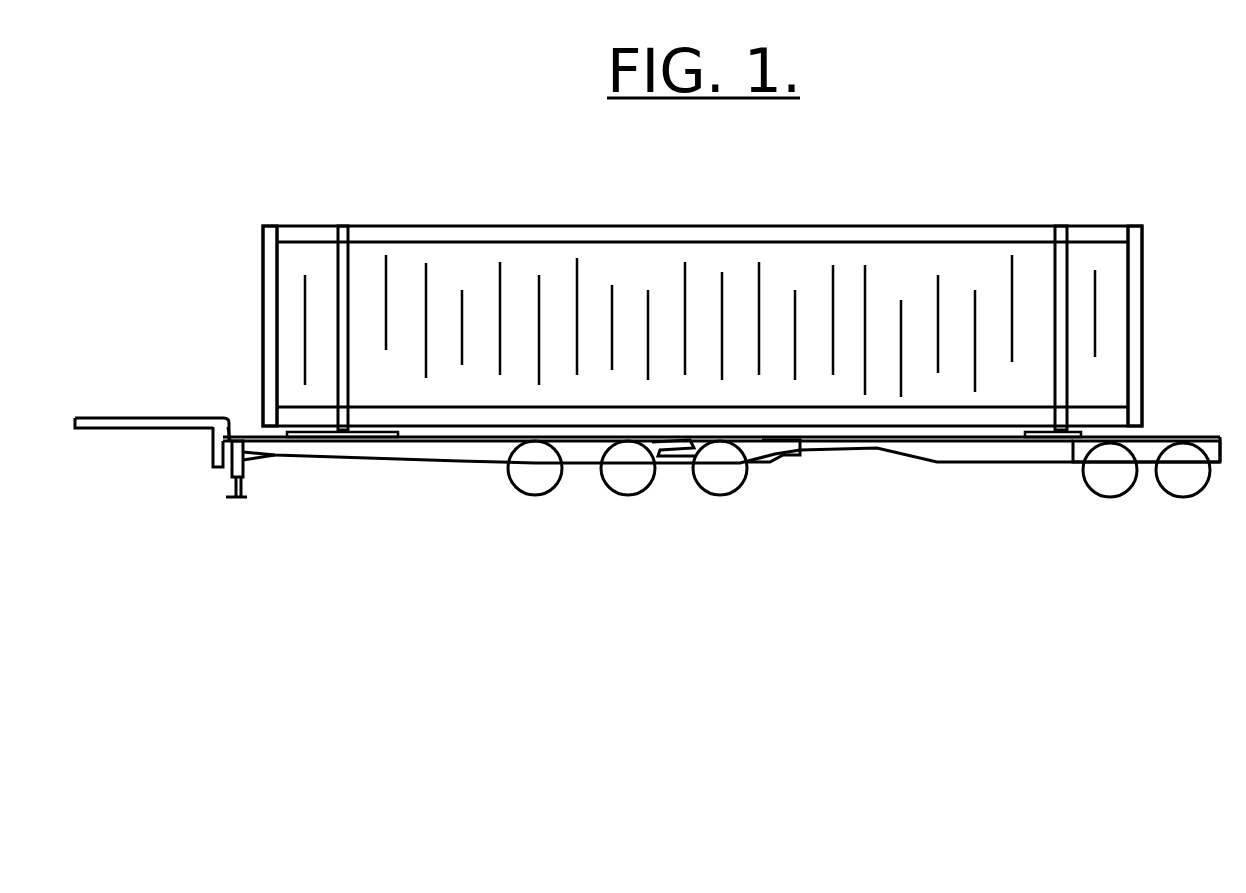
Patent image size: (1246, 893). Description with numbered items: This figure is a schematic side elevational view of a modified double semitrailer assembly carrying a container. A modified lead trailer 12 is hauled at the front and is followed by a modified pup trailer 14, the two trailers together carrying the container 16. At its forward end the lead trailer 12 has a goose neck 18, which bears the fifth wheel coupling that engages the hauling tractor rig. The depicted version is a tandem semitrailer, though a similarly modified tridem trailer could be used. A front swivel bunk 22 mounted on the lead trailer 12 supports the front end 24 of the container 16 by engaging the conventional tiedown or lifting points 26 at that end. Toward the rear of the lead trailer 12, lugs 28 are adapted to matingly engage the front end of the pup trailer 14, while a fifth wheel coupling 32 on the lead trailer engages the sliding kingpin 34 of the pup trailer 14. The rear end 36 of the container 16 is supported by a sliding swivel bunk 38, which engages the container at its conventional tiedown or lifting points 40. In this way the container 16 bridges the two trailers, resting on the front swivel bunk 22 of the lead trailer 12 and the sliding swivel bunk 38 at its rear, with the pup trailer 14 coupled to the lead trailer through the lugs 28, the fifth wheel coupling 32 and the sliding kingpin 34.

The lead trailer 12 is at (458, 460).
The pup trailer 14 is at (1015, 462).
The container 16 is at (641, 331).
The goose neck 18 is at (160, 417).
The front swivel bunk 22 is at (336, 437).
The front end 24 is at (297, 226).
The tiedown or lifting points 26 is at (343, 428).
The lugs 28 is at (672, 445).
The fifth wheel coupling 32 is at (800, 457).
The sliding kingpin 34 is at (810, 443).
The rear end 36 is at (1105, 226).
The sliding swivel bunk 38 is at (1062, 425).
The tiedown or lifting points 40 is at (1075, 440).